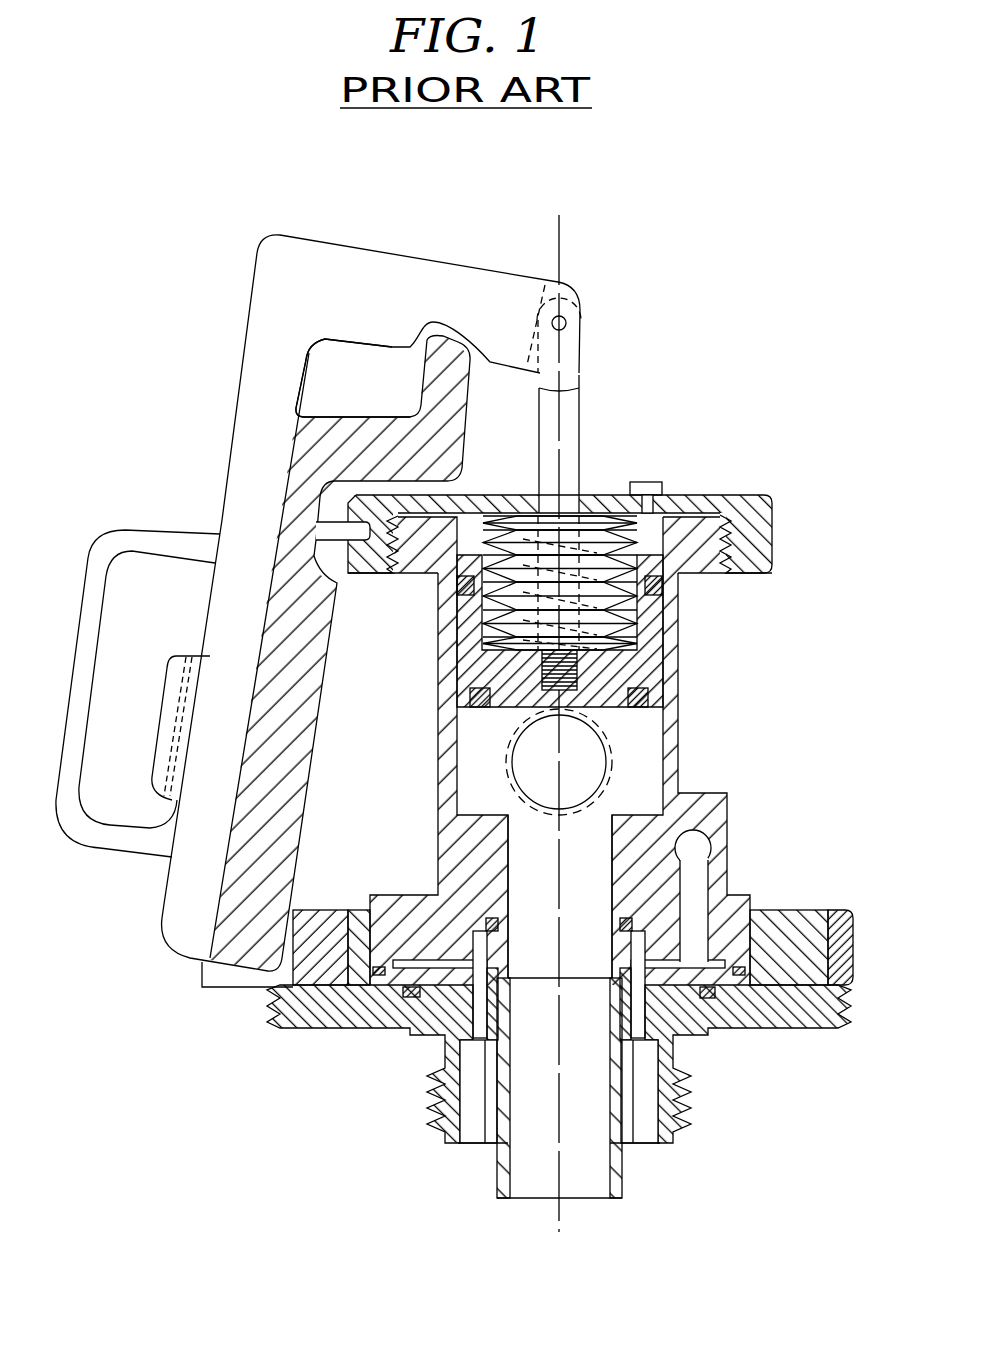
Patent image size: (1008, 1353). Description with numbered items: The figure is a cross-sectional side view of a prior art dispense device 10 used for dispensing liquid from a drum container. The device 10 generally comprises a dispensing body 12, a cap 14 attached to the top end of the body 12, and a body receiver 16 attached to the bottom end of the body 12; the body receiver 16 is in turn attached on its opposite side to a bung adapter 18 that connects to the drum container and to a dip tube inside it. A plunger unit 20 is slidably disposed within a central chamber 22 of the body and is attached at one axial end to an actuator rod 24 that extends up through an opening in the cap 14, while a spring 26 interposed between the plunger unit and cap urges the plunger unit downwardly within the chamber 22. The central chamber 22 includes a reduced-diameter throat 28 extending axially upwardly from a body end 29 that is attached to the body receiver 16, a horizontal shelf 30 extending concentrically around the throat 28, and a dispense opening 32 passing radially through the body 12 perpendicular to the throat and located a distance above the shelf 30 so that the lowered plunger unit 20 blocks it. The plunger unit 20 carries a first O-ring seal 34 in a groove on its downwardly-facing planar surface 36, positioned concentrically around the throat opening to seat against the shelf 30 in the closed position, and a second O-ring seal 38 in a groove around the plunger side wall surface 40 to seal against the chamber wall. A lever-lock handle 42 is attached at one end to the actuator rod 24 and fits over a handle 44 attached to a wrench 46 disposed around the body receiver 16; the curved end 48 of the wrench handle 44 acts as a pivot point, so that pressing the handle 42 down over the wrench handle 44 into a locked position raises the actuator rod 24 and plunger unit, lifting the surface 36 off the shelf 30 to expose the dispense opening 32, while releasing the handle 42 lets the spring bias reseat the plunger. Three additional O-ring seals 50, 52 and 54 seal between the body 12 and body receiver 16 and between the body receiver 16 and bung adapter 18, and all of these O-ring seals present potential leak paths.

The dispense device 10 is at (750, 458).
The dispensing body 12 is at (677, 722).
The cap 14 is at (763, 533).
The body receiver 16 is at (777, 913).
The bung adapter 18 is at (750, 1020).
The plunger unit 20 is at (472, 660).
The central chamber 22 is at (462, 757).
The actuator rod 24 is at (578, 410).
The spring 26 is at (593, 548).
The throat 28 is at (508, 853).
The body end 29 is at (610, 1012).
The horizontal shelf 30 is at (637, 813).
The dispense opening 32 is at (530, 777).
The first O-ring seal 34 is at (663, 698).
The plunger downwardly-facing planar surface 36 is at (455, 700).
The second O-ring seal 38 is at (680, 586).
The plunger side wall surface 40 is at (455, 620).
The lever-lock handle 42 is at (270, 348).
The wrench handle 44 is at (272, 846).
The wrench 46 is at (845, 953).
The curved end 48 is at (400, 372).
The O-ring seal 50 is at (623, 925).
The O-ring seal 52 is at (380, 970).
The O-ring seal 54 is at (427, 1003).